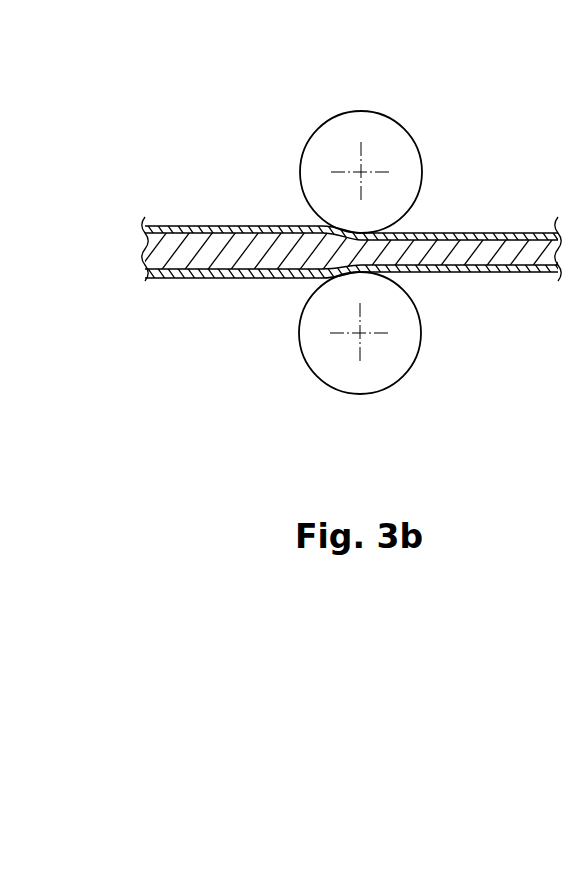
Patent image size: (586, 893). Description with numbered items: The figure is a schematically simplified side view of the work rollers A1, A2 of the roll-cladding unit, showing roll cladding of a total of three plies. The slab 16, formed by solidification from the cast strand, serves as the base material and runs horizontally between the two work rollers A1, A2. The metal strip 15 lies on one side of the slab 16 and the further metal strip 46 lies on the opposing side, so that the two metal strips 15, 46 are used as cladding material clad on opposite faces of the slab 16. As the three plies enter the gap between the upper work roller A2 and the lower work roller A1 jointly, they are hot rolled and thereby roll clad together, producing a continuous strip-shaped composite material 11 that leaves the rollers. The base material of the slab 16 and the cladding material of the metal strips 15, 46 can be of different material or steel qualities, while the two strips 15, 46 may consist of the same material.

The composite material 11 is at (532, 202).
The metal strip 15 is at (202, 233).
The slab 16 is at (145, 250).
The further metal strip 46 is at (202, 269).
The work roller A1 is at (405, 350).
The work roller A2 is at (400, 148).